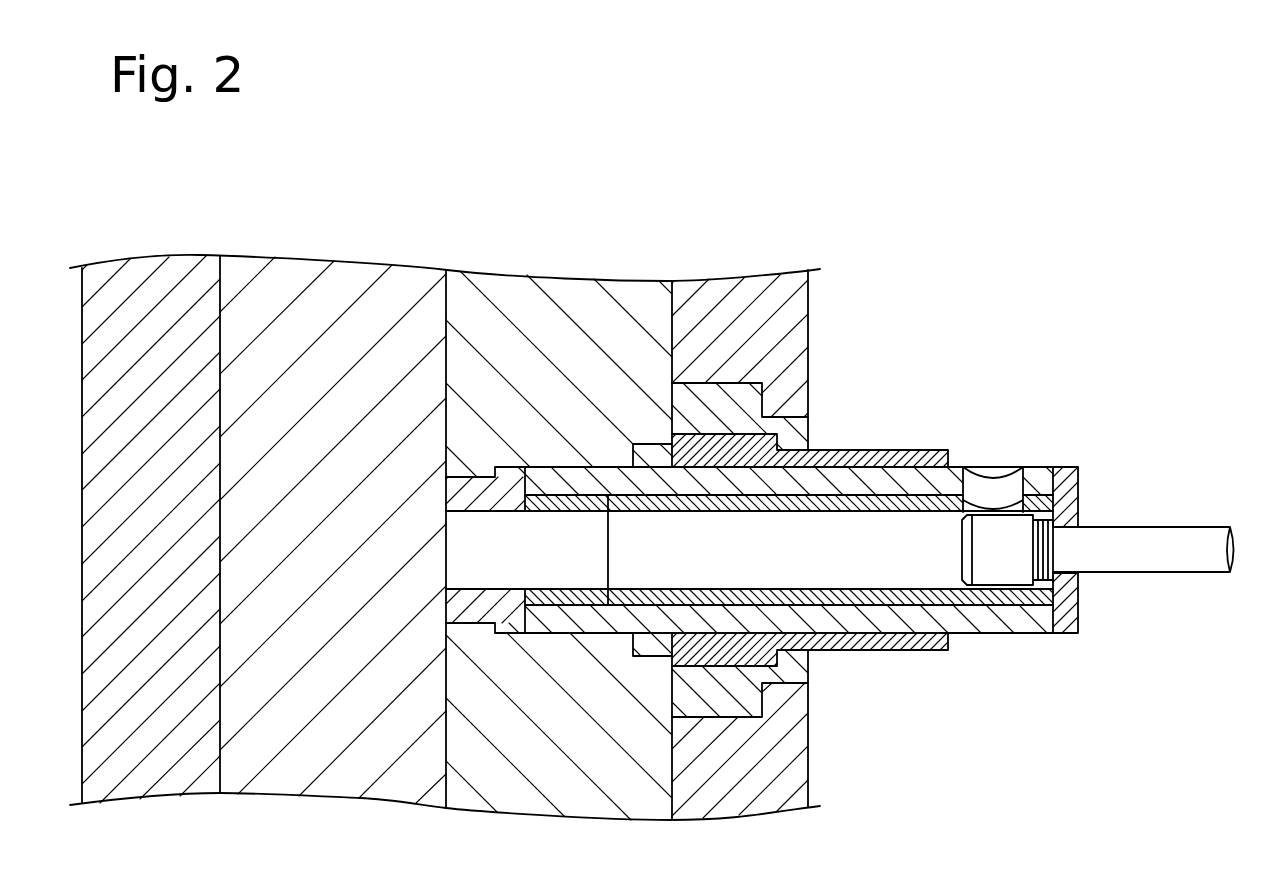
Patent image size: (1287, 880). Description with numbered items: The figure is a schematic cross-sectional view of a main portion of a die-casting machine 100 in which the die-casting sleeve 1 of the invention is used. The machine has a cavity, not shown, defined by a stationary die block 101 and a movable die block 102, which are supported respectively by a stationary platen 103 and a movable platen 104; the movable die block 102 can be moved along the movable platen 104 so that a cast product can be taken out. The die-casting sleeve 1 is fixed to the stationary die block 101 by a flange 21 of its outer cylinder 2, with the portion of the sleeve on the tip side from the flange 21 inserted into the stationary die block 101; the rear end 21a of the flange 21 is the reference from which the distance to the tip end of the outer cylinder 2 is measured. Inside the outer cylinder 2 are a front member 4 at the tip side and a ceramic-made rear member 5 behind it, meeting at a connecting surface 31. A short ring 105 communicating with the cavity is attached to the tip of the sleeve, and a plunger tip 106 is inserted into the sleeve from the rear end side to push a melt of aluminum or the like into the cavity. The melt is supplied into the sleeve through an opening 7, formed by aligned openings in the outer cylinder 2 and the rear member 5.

The die-casting machine 100 is at (886, 222).
The stationary die block 101 is at (568, 295).
The movable die block 102 is at (350, 273).
The stationary platen 103 is at (736, 292).
The movable platen 104 is at (142, 268).
The short ring 105 is at (472, 603).
The plunger tip 106 is at (1148, 530).
The die-casting sleeve 1 is at (893, 436).
The outer cylinder 2 is at (567, 627).
The flange 21 is at (652, 652).
The rear end of the flange 21a is at (687, 640).
The connecting surface 31 is at (610, 544).
The front member 4 is at (568, 503).
The rear member 5 is at (730, 503).
The opening 7 is at (993, 468).